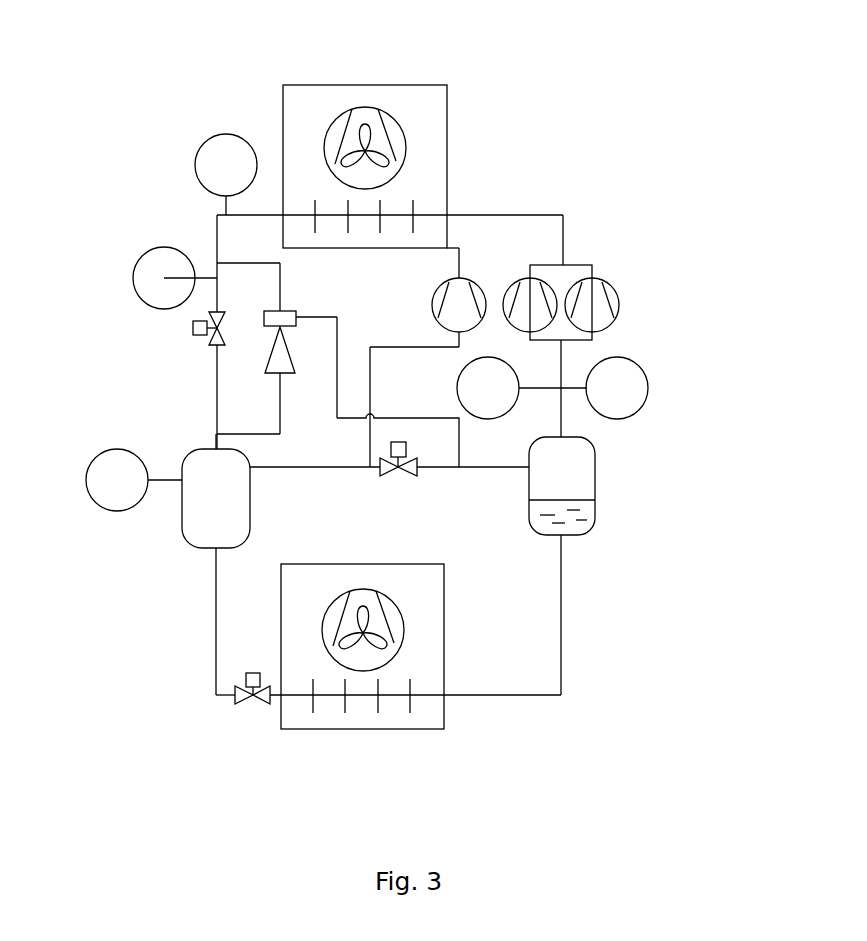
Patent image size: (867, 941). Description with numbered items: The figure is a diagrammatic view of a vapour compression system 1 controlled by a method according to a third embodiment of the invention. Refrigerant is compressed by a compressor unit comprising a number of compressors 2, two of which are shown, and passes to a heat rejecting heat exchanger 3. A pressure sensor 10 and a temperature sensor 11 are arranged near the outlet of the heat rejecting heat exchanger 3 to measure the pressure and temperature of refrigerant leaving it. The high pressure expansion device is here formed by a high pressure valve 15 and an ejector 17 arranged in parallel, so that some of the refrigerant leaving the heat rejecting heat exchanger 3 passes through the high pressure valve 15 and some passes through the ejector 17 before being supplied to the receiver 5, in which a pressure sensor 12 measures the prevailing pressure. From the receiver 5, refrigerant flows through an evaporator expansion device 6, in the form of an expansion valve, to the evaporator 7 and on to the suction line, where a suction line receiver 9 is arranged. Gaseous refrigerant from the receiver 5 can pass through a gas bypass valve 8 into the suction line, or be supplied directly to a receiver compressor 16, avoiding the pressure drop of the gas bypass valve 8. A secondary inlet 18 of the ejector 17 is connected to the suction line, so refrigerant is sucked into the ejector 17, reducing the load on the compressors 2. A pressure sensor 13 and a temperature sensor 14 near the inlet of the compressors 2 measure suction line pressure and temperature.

The vapour compression system 1 is at (548, 80).
The compressors 2 is at (532, 293).
The heat rejecting heat exchanger 3 is at (375, 97).
The receiver 5 is at (202, 527).
The evaporator expansion device 6 is at (262, 700).
The evaporator 7 is at (375, 713).
The gas bypass valve 8 is at (408, 470).
The suction line receiver 9 is at (580, 477).
The pressure sensor 10 is at (215, 143).
The temperature sensor 11 is at (147, 268).
The pressure sensor 12 is at (107, 463).
The pressure sensor 13 is at (630, 382).
The temperature sensor 14 is at (490, 405).
The high pressure valve 15 is at (213, 340).
The receiver compressor 16 is at (455, 301).
The ejector 17 is at (275, 355).
The secondary inlet 18 is at (297, 316).